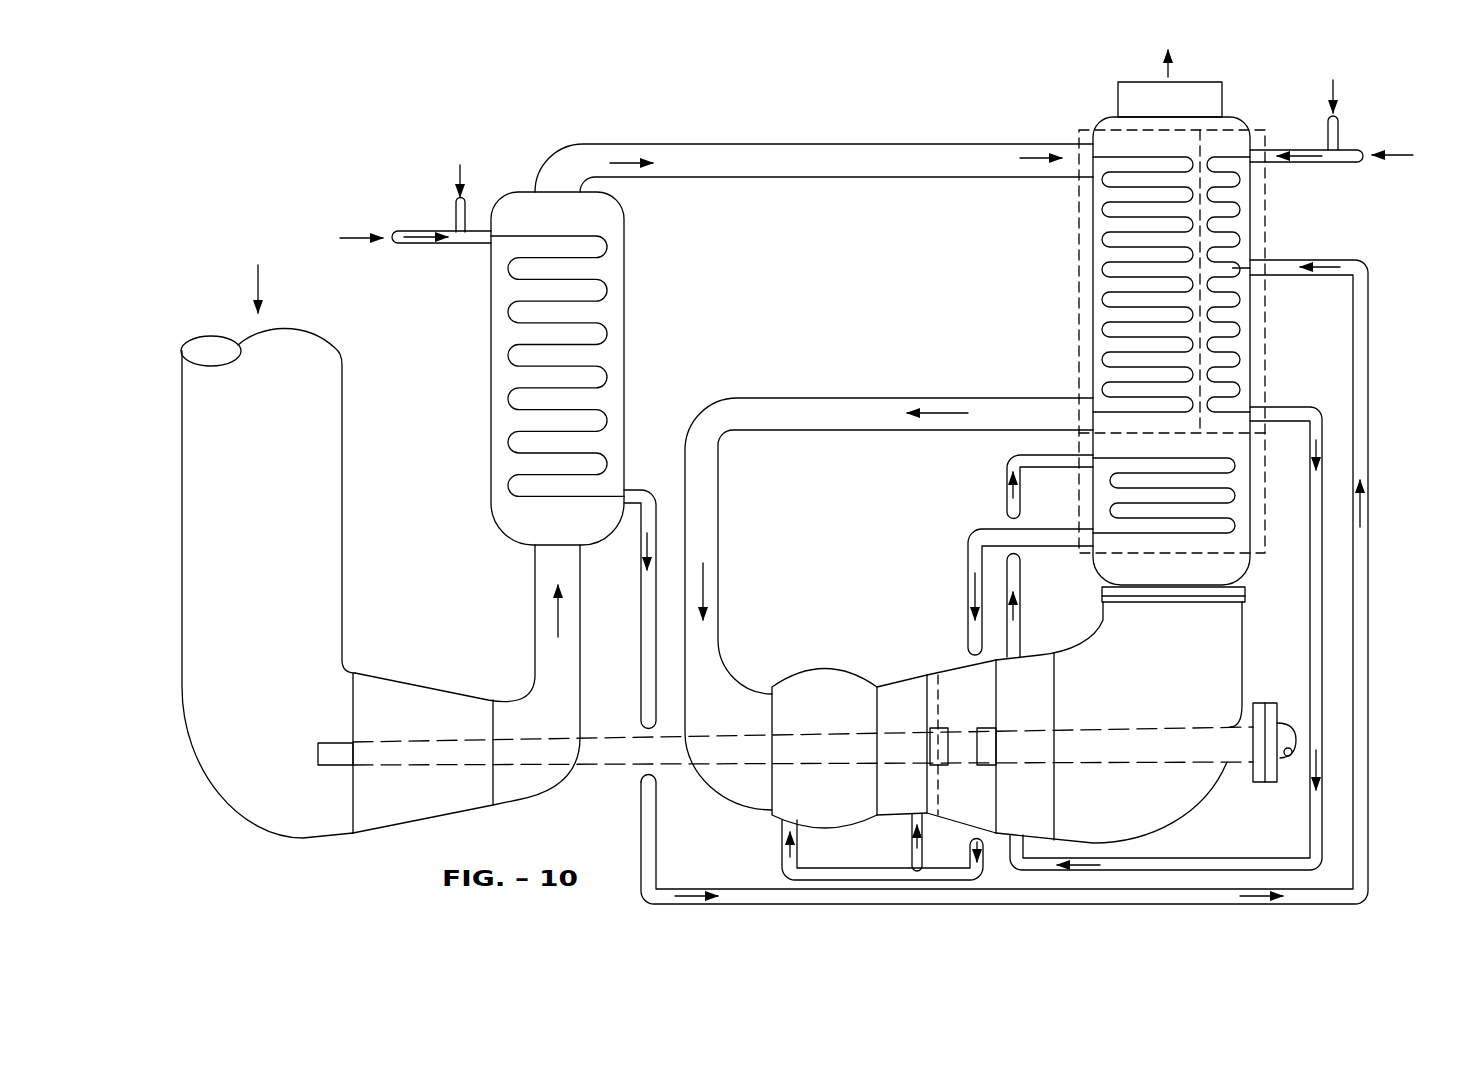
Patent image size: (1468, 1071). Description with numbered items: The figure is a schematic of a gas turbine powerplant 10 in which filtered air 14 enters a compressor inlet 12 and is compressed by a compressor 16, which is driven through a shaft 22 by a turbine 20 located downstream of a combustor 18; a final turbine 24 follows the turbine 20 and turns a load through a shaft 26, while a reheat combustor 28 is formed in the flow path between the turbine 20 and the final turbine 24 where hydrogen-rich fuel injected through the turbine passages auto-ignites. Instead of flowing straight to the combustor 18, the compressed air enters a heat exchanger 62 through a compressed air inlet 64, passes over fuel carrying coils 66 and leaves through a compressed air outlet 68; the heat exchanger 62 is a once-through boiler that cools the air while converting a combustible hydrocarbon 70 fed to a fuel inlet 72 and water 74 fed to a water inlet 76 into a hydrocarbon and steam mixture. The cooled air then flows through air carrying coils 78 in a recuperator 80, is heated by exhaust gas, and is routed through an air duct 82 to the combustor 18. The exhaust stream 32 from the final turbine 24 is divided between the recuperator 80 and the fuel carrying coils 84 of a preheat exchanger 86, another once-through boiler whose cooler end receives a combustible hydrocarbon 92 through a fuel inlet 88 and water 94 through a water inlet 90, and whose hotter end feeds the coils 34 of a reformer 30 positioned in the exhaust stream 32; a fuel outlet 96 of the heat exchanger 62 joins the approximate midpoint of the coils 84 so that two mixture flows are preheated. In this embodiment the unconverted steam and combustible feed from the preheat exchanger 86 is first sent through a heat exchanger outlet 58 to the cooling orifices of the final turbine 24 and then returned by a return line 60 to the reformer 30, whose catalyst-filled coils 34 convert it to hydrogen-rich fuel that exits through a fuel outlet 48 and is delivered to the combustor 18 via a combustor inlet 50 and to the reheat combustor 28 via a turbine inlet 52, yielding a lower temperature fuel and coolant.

The gas turbine powerplant 10 is at (278, 152).
The compressor inlet 12 is at (344, 465).
The filtered air 14 is at (258, 275).
The compressor 16 is at (405, 680).
The combustor 18 is at (828, 663).
The turbine 20 is at (897, 680).
The shaft 22 is at (343, 742).
The final turbine 24 is at (1030, 652).
The shaft 26 is at (1285, 777).
The reheat combustor 28 is at (935, 670).
The reformer 30 is at (1265, 448).
The exhaust stream 32 is at (1170, 69).
The fuel carrying coils 34 is at (1237, 530).
The fuel outlet 48 is at (965, 562).
The combustor inlet 50 is at (782, 848).
The turbine inlet 52 is at (912, 832).
The heat exchanger outlet 58 is at (1310, 672).
The return line 60 is at (1008, 487).
The heat exchanger 62 is at (492, 397).
The compressed air inlet 64 is at (533, 648).
The fuel carrying coils 66 is at (511, 488).
The compressed air outlet 68 is at (640, 143).
The combustible hydrocarbon 70 is at (345, 238).
The fuel inlet 72 is at (422, 230).
The water 74 is at (460, 169).
The water inlet 76 is at (450, 213).
The air carrying coils 78 is at (1110, 322).
The recuperator 80 is at (1078, 363).
The air duct 82 is at (845, 398).
The fuel carrying coils 84 is at (1232, 230).
The preheat exchanger 86 is at (1265, 335).
The fuel inlet 88 is at (1347, 150).
The water inlet 90 is at (1327, 133).
The combustible hydrocarbon 92 is at (1409, 155).
The water 94 is at (1332, 87).
The fuel outlet 96 is at (643, 850).